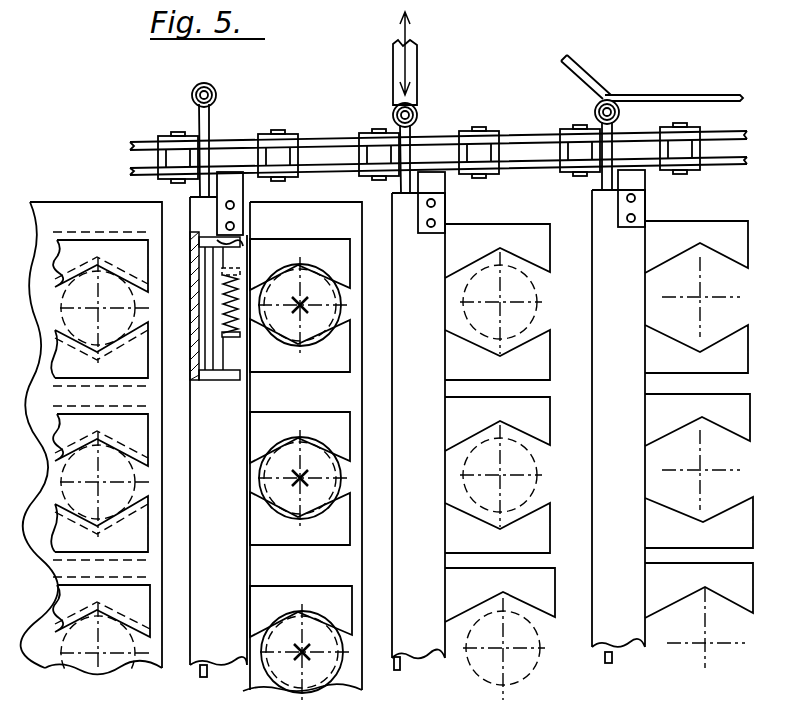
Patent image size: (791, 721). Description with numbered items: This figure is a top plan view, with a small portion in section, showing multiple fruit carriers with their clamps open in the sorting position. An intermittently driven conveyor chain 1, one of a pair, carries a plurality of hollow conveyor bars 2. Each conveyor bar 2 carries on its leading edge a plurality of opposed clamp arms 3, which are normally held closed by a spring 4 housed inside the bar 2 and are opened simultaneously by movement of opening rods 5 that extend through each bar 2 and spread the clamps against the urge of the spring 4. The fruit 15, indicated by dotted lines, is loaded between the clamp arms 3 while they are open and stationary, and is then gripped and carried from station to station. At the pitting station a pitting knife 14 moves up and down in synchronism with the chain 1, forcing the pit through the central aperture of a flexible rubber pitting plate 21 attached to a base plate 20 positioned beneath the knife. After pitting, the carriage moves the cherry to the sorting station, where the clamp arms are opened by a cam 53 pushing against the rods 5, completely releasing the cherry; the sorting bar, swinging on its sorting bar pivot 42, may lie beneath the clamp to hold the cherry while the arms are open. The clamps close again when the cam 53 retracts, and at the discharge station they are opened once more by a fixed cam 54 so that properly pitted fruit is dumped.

The chain 1 is at (517, 133).
The conveyor bar 2 is at (226, 488).
The clamp arm 3 is at (126, 264).
The spring 4 is at (230, 308).
The opening rod 5 is at (204, 114).
The pitting knife 14 is at (292, 319).
The fruit 15 is at (64, 323).
The base plate 20 is at (296, 231).
The pitting plate 21 is at (312, 328).
The sorting bar pivot 42 is at (456, 709).
The cam 53 is at (415, 86).
The fixed cam 54 is at (583, 80).